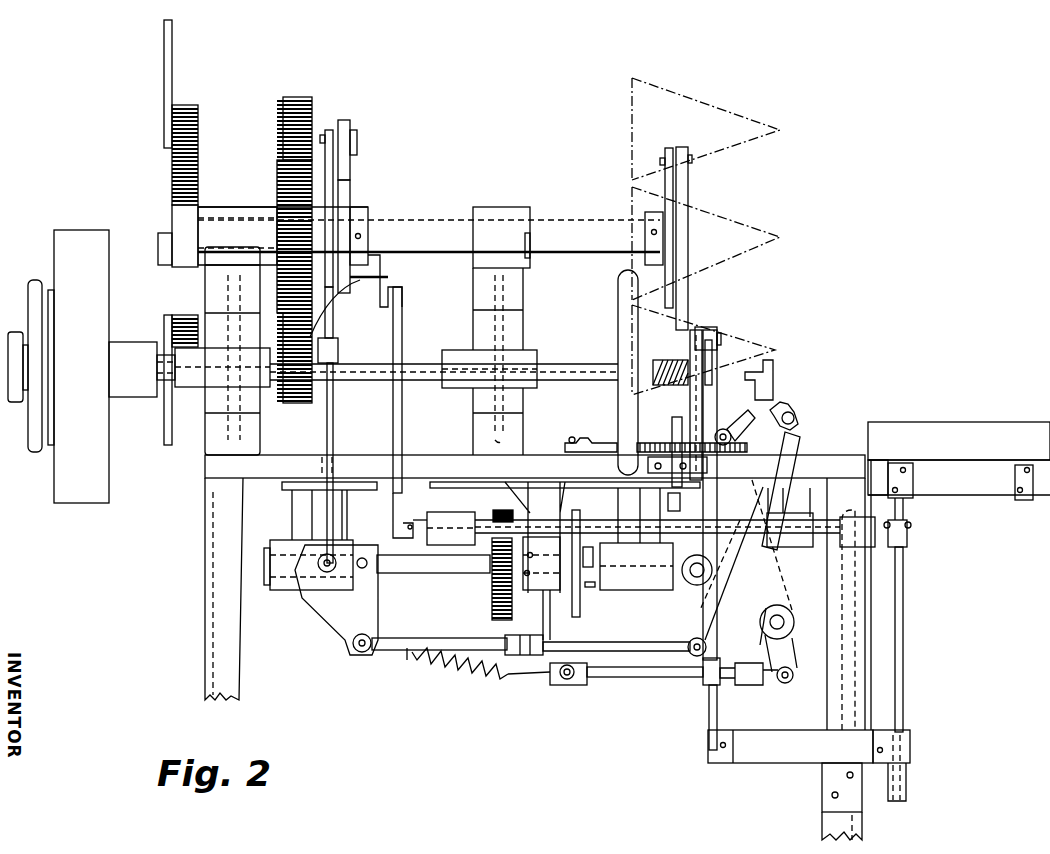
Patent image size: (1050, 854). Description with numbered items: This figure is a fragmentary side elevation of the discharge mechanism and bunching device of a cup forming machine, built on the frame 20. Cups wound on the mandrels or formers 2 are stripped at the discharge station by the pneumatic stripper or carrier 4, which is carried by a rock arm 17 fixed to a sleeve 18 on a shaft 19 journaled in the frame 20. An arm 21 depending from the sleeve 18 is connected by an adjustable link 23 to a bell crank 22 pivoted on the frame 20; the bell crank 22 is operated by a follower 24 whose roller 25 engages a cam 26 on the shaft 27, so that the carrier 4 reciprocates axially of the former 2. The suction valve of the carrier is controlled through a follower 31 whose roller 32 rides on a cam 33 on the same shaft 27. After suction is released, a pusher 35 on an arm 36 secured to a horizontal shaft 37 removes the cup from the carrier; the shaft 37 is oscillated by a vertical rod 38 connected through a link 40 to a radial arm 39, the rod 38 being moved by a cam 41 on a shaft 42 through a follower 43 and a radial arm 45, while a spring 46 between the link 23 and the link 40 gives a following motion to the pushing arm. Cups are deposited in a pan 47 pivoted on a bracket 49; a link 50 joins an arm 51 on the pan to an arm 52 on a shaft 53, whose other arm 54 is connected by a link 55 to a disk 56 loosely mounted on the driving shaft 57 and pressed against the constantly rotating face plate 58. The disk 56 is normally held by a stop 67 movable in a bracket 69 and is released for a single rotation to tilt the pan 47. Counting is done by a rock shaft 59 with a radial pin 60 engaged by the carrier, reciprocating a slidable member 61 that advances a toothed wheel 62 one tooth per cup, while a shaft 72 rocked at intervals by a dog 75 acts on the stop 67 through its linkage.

The mandrel or former 2 is at (752, 124).
The stripper or carrier plate 4 is at (793, 409).
The rock arm 17 is at (797, 444).
The sleeve 18 is at (690, 585).
The shaft 19 is at (750, 573).
The frame 20 is at (233, 508).
The arm 21 is at (693, 626).
The bell crank 22 is at (357, 618).
The adjustable link 23 is at (491, 643).
The follower 24 is at (330, 324).
The roller 25 is at (342, 123).
The cam 26 is at (350, 181).
The shaft 27 is at (417, 224).
The follower 31 is at (688, 246).
The roller 32 is at (668, 151).
The cam 33 is at (645, 246).
The pusher 35 is at (774, 354).
The arm 36 is at (760, 598).
The horizontal shaft 37 is at (787, 624).
The vertical rod 38 is at (536, 612).
The radial arm 39 is at (794, 659).
The link 40 is at (633, 677).
The cam 41 is at (580, 610).
The shaft 42 is at (413, 573).
The follower 43 is at (588, 585).
The radial arm 45 is at (558, 570).
The spring 46 is at (472, 678).
The pan 47 is at (965, 423).
The bracket 49 is at (985, 492).
The link 50 is at (905, 607).
The arm 51 is at (907, 523).
The arm 52 is at (904, 790).
The shaft 53 is at (803, 765).
The arm 54 is at (710, 734).
The link 55 is at (717, 357).
The disk 56 is at (699, 327).
The driving shaft 57 is at (568, 373).
The face plate 58 is at (717, 386).
The rock shaft 59 is at (733, 456).
The radial pin 60 is at (733, 440).
The slidable member 61 is at (613, 446).
The toothed wheel 62 is at (672, 443).
The stop 67 is at (678, 502).
The bracket 69 is at (695, 422).
The shaft 72 is at (604, 530).
The dog 75 is at (721, 584).